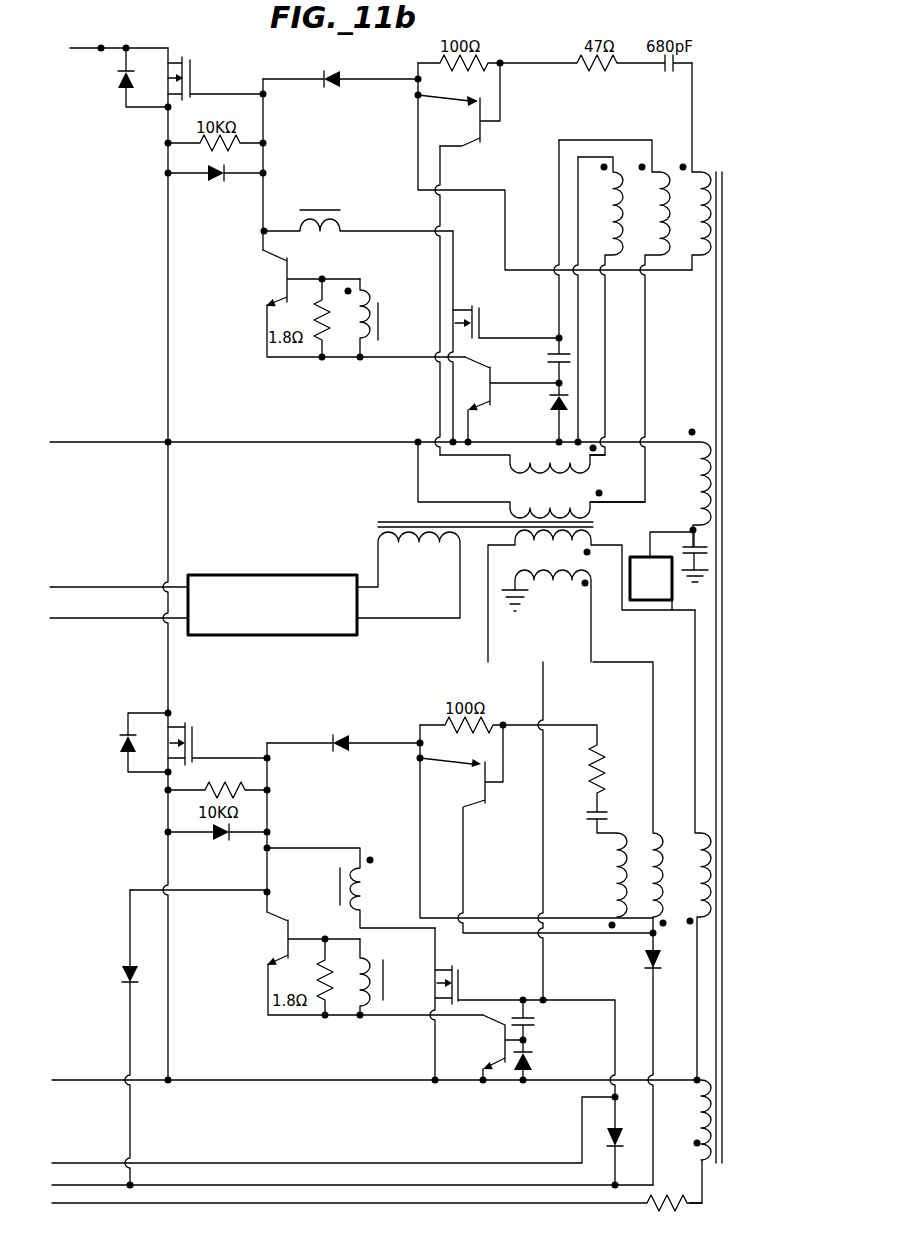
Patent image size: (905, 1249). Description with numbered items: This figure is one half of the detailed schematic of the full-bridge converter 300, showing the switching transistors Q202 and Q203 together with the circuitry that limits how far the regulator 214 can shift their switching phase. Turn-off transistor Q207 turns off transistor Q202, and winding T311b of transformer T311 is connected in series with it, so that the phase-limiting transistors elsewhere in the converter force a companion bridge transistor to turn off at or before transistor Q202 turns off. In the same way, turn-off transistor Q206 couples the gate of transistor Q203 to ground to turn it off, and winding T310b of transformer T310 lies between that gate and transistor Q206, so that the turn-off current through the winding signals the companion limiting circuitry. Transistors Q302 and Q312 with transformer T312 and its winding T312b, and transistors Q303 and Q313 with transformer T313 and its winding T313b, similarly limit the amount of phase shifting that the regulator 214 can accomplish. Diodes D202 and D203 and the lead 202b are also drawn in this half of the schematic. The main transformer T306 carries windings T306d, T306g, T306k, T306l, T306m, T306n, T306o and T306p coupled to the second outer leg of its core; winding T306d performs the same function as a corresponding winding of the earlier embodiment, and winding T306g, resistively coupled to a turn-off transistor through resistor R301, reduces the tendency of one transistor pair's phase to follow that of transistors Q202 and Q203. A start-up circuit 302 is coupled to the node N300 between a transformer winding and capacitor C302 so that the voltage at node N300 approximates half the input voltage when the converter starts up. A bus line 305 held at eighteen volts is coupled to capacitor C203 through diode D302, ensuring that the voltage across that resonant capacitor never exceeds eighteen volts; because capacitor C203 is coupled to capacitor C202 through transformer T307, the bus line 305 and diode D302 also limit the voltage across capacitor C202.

The full-bridge converter 300 is at (130, 173).
The diode D202 is at (120, 80).
The transistor Q202 is at (184, 60).
The transformer T311 is at (357, 220).
The winding T311b is at (327, 220).
The turn-off transistor Q207 is at (463, 306).
The transistor Q302 is at (280, 268).
The transformer T312 is at (352, 336).
The transformer winding T312b is at (350, 357).
The transistor Q312 is at (492, 402).
The capacitor C202 is at (549, 370).
The transformer T306 is at (722, 308).
The winding T306k is at (621, 167).
The winding T306l is at (665, 257).
The winding T306m is at (705, 170).
The winding T306d is at (717, 444).
The winding T306n is at (618, 858).
The winding T306o is at (668, 857).
The winding T306p is at (712, 925).
The winding T306g is at (712, 1163).
The node N300 is at (695, 529).
The capacitor C302 is at (696, 542).
The start-up circuit 302 is at (661, 571).
The transformer T307 is at (378, 523).
The regulator 214 is at (285, 575).
The diode D203 is at (121, 748).
The transistor Q203 is at (187, 727).
The transformer T310 is at (351, 888).
The winding T310b is at (322, 891).
The transistor Q303 is at (284, 941).
The transformer T313 is at (346, 991).
The transformer winding T313b is at (350, 1010).
The turn-off transistor Q206 is at (451, 972).
The transistor Q313 is at (502, 1040).
The capacitor C203 is at (533, 1020).
The diode D302 is at (648, 962).
The supply line 202b is at (247, 1080).
The bus line 305 is at (218, 1185).
The resistor R301 is at (682, 1199).